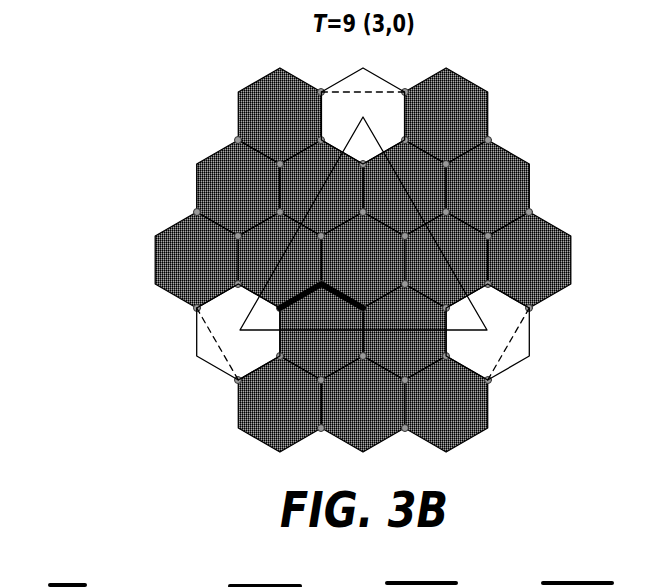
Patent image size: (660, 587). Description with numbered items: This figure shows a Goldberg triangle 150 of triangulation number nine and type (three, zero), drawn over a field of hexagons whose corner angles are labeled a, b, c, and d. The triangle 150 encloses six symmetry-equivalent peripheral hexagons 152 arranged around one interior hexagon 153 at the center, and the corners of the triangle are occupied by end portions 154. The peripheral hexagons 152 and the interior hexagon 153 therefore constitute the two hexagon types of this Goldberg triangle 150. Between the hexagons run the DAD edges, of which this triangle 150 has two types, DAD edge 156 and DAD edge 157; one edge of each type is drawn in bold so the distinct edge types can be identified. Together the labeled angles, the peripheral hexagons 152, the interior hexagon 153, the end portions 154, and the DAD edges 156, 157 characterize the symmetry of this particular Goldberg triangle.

The T=9 (3,0) Goldberg triangle 150 is at (420, 191).
The symmetry-equivalent peripheral 6 gons 152 is at (302, 157).
The interior 6 gon 153 is at (396, 258).
The end portions 154 is at (362, 132).
The DAD edge 156 is at (255, 292).
The DAD edge 157 is at (360, 310).